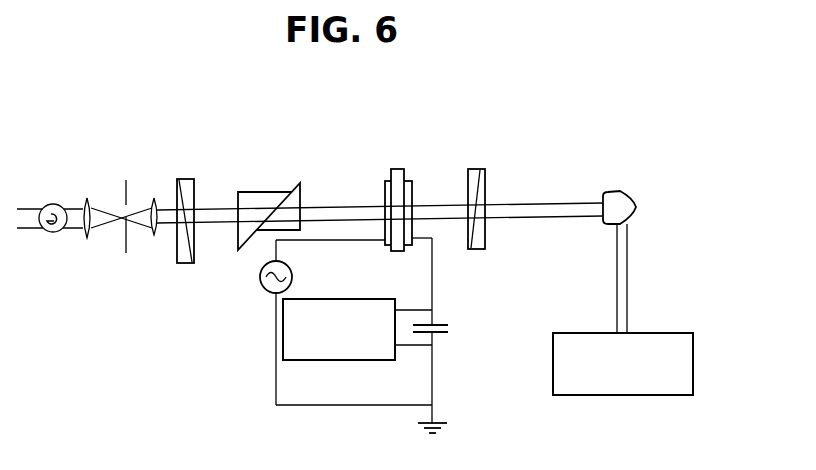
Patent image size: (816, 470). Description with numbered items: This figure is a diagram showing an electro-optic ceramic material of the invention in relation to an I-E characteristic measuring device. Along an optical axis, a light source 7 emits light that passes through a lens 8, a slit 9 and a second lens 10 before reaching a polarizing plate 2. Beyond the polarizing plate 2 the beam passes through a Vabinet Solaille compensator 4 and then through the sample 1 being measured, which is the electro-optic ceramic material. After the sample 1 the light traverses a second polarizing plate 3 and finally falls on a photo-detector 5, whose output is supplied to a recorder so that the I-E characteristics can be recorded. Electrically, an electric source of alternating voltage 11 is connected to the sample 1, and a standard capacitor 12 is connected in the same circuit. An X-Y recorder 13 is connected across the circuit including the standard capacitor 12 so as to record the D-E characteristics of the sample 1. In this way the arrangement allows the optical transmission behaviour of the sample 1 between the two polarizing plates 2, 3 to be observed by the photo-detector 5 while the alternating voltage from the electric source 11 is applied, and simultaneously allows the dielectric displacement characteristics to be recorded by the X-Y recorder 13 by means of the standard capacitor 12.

The sample being measured 1 is at (401, 169).
The polarizing plate 2 is at (187, 179).
The polarizing plate 3 is at (477, 169).
The Vabinet Solaille compensator 4 is at (270, 192).
The photo-detector 5 is at (620, 196).
The light source 7 is at (53, 204).
The lens 8 is at (88, 198).
The slit 9 is at (127, 180).
The lens 10 is at (155, 198).
The electric source of alternating voltage 11 is at (291, 272).
The standard capacitor 12 is at (440, 329).
The X-Y recorder 13 is at (360, 299).